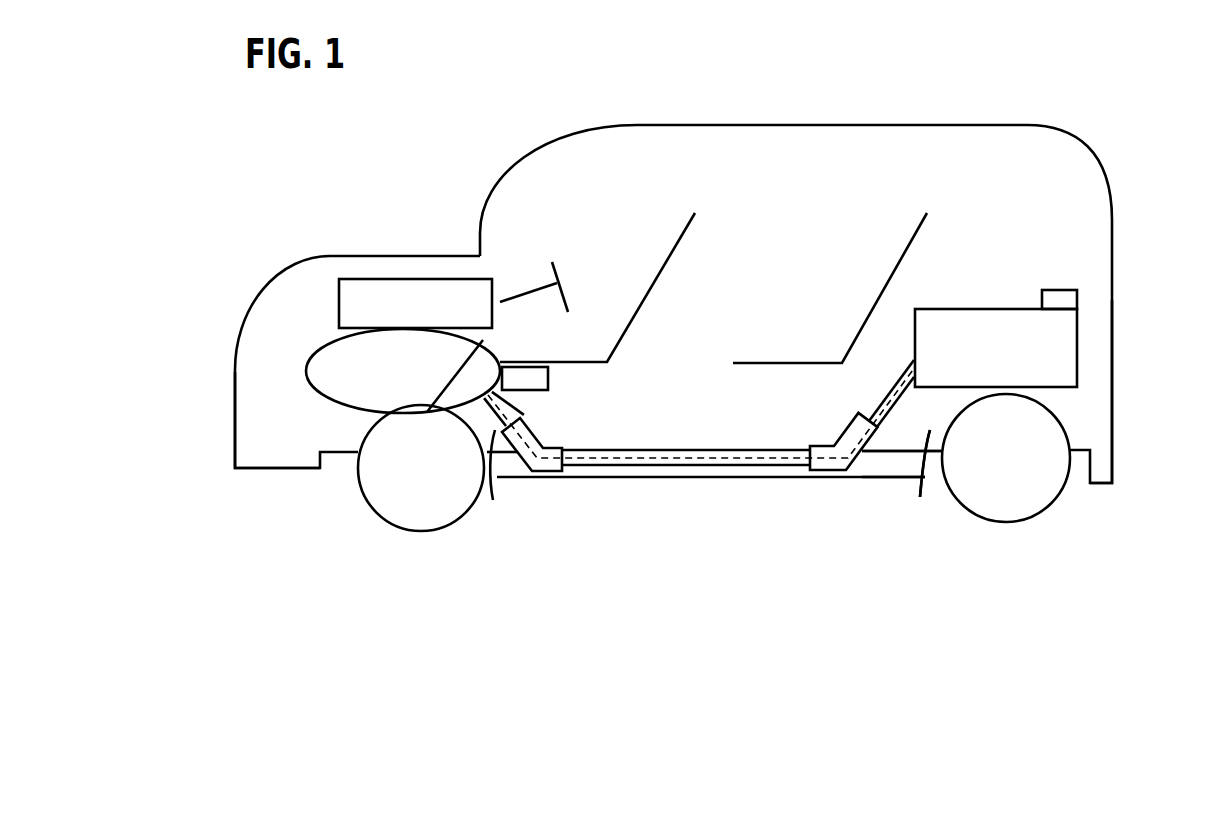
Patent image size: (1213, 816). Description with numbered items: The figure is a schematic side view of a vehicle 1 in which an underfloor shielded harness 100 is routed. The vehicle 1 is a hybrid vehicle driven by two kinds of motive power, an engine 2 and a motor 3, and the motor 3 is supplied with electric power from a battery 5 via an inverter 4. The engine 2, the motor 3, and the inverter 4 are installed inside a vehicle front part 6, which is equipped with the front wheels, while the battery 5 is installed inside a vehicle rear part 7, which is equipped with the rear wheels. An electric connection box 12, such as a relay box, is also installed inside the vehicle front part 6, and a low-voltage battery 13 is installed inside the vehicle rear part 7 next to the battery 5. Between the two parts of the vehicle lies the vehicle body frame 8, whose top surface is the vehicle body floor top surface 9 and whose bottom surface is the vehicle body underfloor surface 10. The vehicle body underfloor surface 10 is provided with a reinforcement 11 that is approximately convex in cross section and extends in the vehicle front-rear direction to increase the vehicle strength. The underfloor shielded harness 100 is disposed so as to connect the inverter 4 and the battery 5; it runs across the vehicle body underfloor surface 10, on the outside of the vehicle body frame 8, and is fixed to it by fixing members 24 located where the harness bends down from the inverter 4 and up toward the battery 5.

The vehicle 1 is at (865, 95).
The engine 2 is at (387, 290).
The motor 3 is at (306, 371).
The inverter 4 is at (481, 360).
The battery 5 is at (952, 325).
The vehicle front part 6 is at (268, 432).
The vehicle rear part 7 is at (1097, 390).
The vehicle body frame 8 is at (943, 433).
The vehicle body floor top surface 9 is at (895, 440).
The vehicle body underfloor surface 10 is at (917, 463).
The reinforcement 11 is at (860, 470).
The electric connection box 12 is at (550, 378).
The low-voltage battery 13 is at (1063, 300).
The fixing members 24 is at (523, 475).
The underfloor shielded harness 100 is at (708, 470).